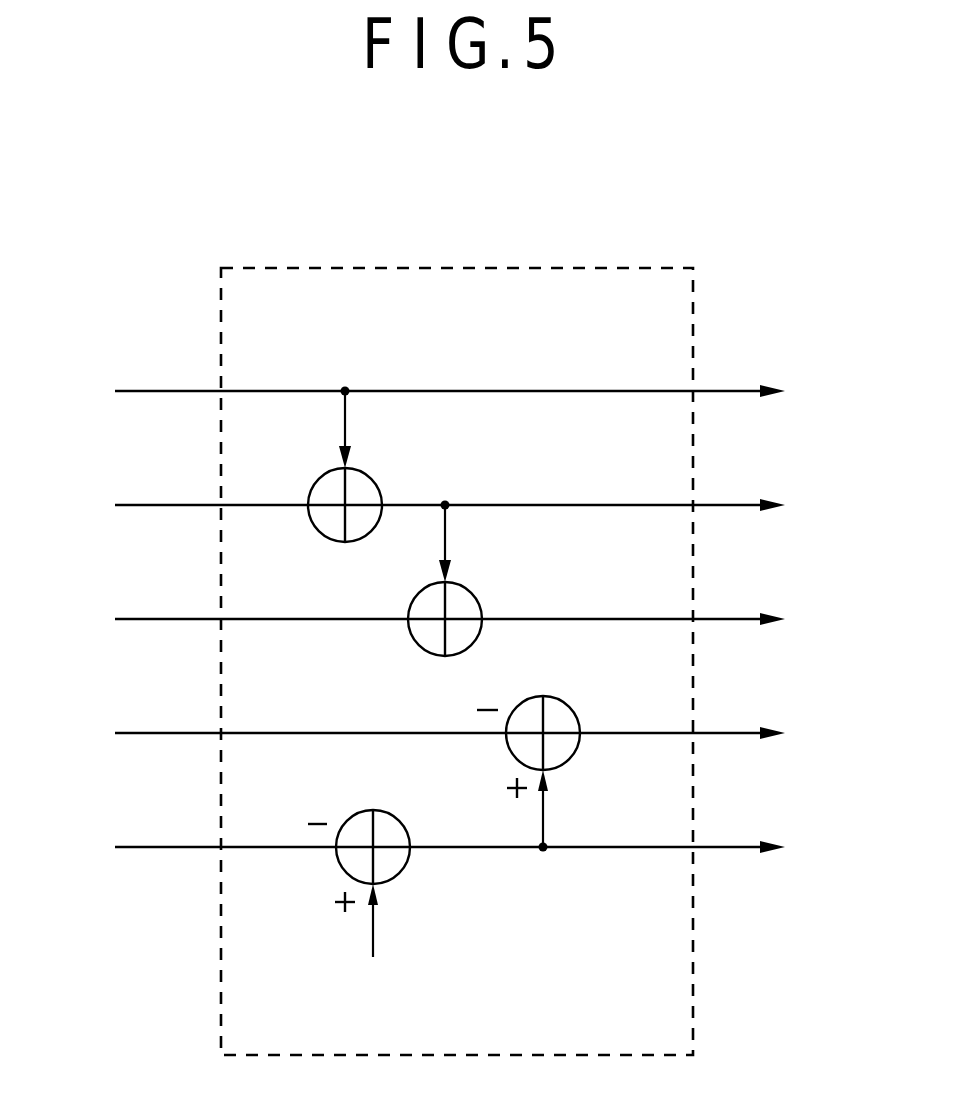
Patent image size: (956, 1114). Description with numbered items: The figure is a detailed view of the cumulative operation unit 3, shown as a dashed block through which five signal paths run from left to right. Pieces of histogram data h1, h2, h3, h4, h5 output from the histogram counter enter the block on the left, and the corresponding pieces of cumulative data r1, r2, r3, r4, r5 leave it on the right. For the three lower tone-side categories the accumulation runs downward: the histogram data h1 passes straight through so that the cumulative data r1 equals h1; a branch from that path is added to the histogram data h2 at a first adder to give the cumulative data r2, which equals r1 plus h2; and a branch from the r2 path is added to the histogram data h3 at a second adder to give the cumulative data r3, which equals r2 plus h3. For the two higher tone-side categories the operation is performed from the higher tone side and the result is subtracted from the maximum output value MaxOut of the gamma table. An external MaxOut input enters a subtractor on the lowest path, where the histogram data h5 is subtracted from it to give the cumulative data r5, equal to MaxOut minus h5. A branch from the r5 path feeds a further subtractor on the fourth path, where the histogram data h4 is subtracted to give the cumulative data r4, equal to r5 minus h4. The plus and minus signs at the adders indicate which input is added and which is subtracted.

The cumulative operation unit 3 is at (487, 266).
The histogram data h1 is at (251, 391).
The histogram data h2 is at (251, 505).
The histogram data h3 is at (251, 619).
The histogram data h4 is at (251, 733).
The histogram data h5 is at (251, 847).
The cumulative data r1 is at (648, 392).
The cumulative data r2 is at (648, 506).
The cumulative data r3 is at (648, 620).
The cumulative data r4 is at (648, 734).
The cumulative data r5 is at (648, 848).
The maximum output value MaxOut is at (363, 944).